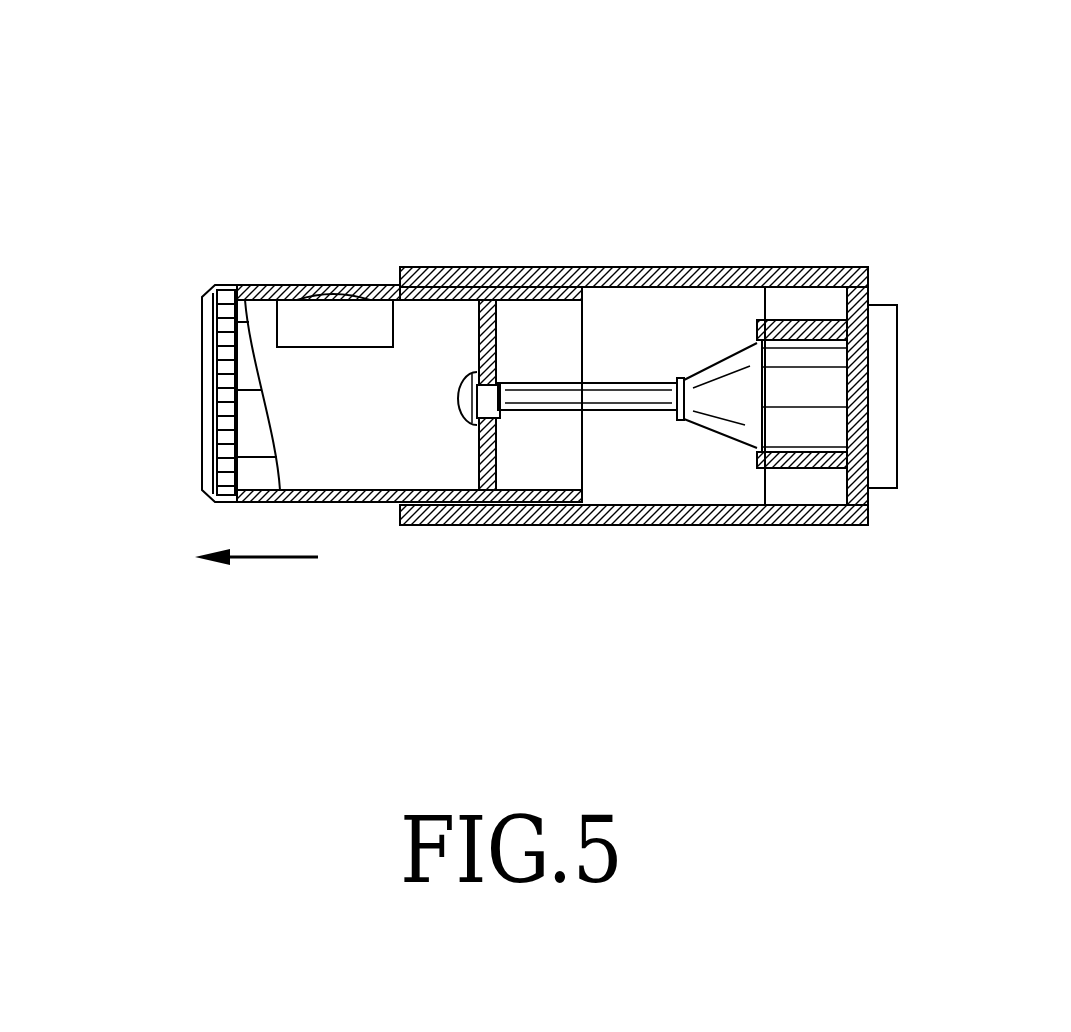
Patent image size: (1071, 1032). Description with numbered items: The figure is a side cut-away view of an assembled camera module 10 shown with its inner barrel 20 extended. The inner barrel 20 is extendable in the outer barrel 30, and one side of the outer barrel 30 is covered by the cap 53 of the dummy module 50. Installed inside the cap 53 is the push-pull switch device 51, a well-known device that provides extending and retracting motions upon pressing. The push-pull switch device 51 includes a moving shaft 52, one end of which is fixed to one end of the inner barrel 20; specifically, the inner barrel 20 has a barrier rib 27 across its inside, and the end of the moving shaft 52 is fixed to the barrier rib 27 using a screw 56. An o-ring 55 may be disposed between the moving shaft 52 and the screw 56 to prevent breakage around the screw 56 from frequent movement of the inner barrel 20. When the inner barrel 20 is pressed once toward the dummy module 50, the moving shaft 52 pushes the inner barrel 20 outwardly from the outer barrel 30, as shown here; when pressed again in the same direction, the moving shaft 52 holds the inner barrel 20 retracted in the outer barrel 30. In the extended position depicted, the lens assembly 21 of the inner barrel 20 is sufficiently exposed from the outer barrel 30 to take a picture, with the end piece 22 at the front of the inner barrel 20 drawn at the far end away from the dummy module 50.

The optical pickup device 10 is at (550, 165).
The inner barrel 20 is at (267, 282).
The lens assembly 21 is at (330, 285).
The end cap 22 is at (203, 300).
The barrier rib 27 is at (472, 452).
The outer barrel 30 is at (677, 263).
The dummy module 50 is at (847, 263).
The push-pull switch device 51 is at (727, 442).
The moving shaft 52 is at (647, 412).
The cap 53 is at (845, 525).
The o-ring 55 is at (478, 385).
The screw 56 is at (466, 380).